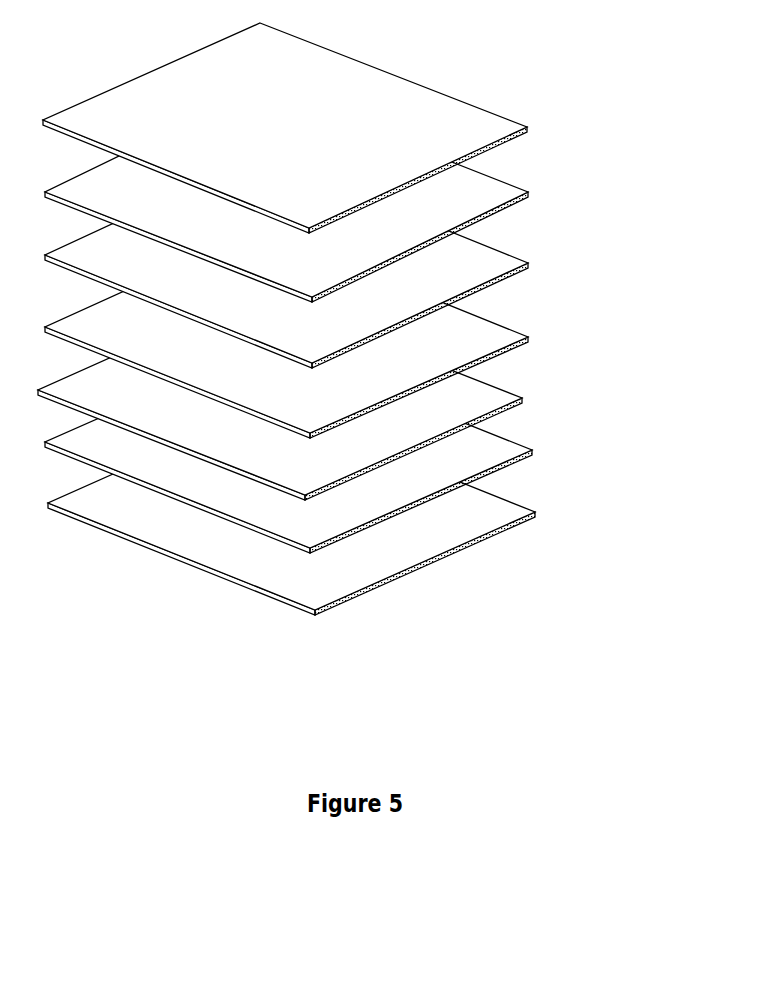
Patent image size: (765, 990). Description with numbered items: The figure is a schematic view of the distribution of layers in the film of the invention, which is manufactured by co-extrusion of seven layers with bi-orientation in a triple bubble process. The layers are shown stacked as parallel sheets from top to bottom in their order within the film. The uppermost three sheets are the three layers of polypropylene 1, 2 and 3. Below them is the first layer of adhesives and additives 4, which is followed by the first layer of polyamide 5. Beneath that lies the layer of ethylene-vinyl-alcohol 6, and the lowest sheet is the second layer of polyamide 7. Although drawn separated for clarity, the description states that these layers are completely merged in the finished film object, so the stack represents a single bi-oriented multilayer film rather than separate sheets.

The polypropylene layer 1 is at (440, 125).
The polypropylene layer 2 is at (426, 212).
The polypropylene layer 3 is at (428, 278).
The first layer of adhesives and additives 4 is at (432, 346).
The first layer of polyamide 5 is at (440, 407).
The layer of ethylene-vinyl-alcohol 6 is at (448, 458).
The second layer of polyamide 7 is at (450, 516).